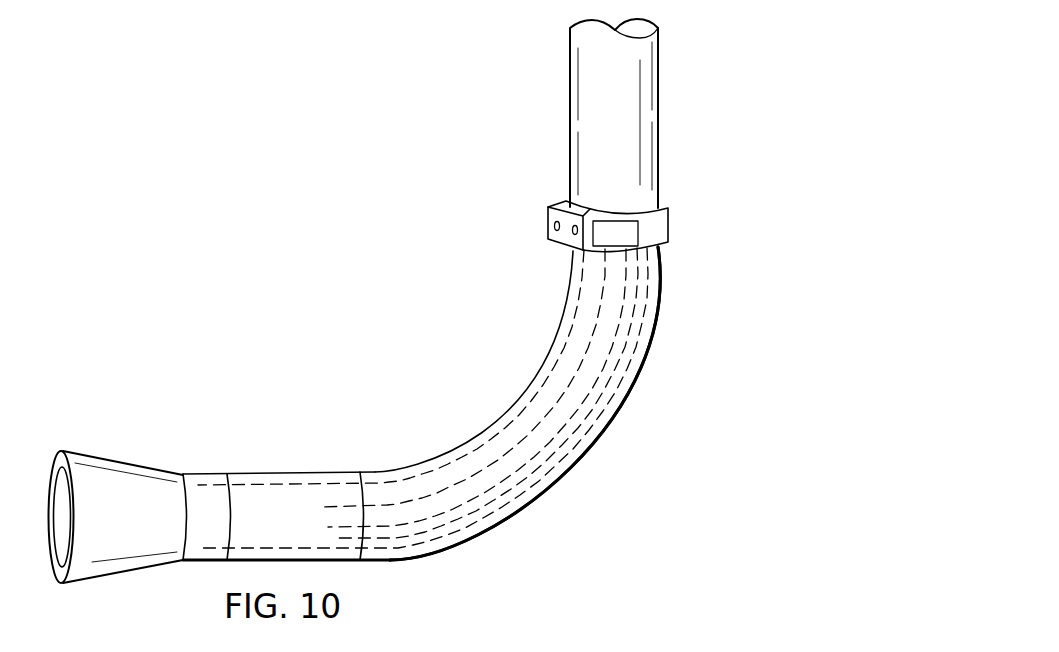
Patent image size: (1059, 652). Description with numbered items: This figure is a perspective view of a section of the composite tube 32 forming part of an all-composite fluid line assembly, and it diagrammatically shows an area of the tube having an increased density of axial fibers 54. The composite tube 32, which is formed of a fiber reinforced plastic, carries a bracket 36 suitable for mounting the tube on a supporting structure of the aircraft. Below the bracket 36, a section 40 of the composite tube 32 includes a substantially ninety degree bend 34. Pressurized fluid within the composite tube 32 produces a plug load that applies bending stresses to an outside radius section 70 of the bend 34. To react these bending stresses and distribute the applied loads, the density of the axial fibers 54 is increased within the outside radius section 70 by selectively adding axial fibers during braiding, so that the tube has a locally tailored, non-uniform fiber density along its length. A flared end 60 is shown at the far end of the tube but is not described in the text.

The composite tube 32 is at (658, 118).
The bracket 36 is at (548, 221).
The section 40 is at (648, 386).
The outside radius section 70 is at (638, 430).
The axial fibers 54 is at (433, 468).
The bend 34 is at (490, 533).
The flared end 60 is at (120, 462).